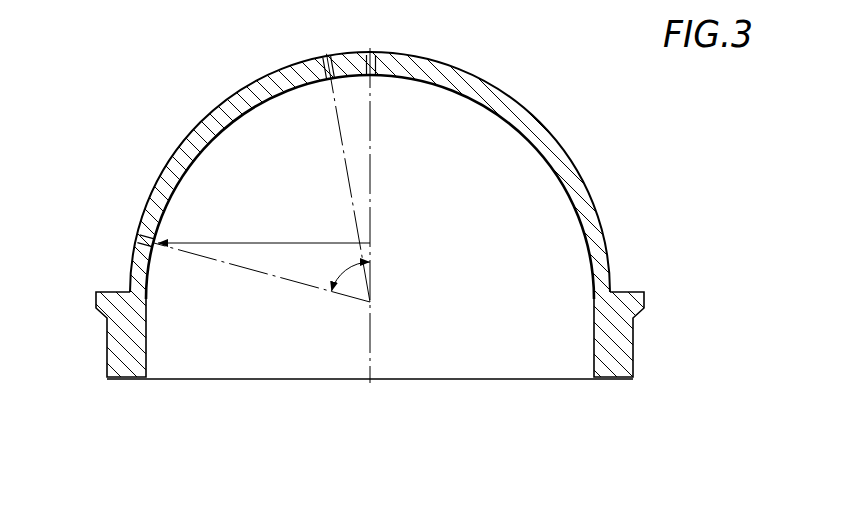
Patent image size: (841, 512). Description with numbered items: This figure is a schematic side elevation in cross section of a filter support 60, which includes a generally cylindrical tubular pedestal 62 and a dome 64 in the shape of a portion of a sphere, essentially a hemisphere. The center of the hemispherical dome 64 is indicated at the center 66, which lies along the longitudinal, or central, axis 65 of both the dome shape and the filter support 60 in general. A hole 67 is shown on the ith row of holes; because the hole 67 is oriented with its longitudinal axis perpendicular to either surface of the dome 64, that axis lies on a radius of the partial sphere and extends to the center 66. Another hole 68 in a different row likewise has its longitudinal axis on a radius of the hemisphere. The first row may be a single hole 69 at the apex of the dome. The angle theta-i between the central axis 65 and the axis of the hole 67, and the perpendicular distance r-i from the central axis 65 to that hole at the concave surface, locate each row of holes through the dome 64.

The filter support 60 is at (487, 70).
The tubular pedestal 62 is at (118, 355).
The dome 64 is at (590, 224).
The central axis 65 is at (374, 172).
The center of the hemisphere 66 is at (378, 310).
The hole 67 is at (140, 246).
The hole 68 is at (322, 60).
The single hole at the apex 69 is at (385, 59).